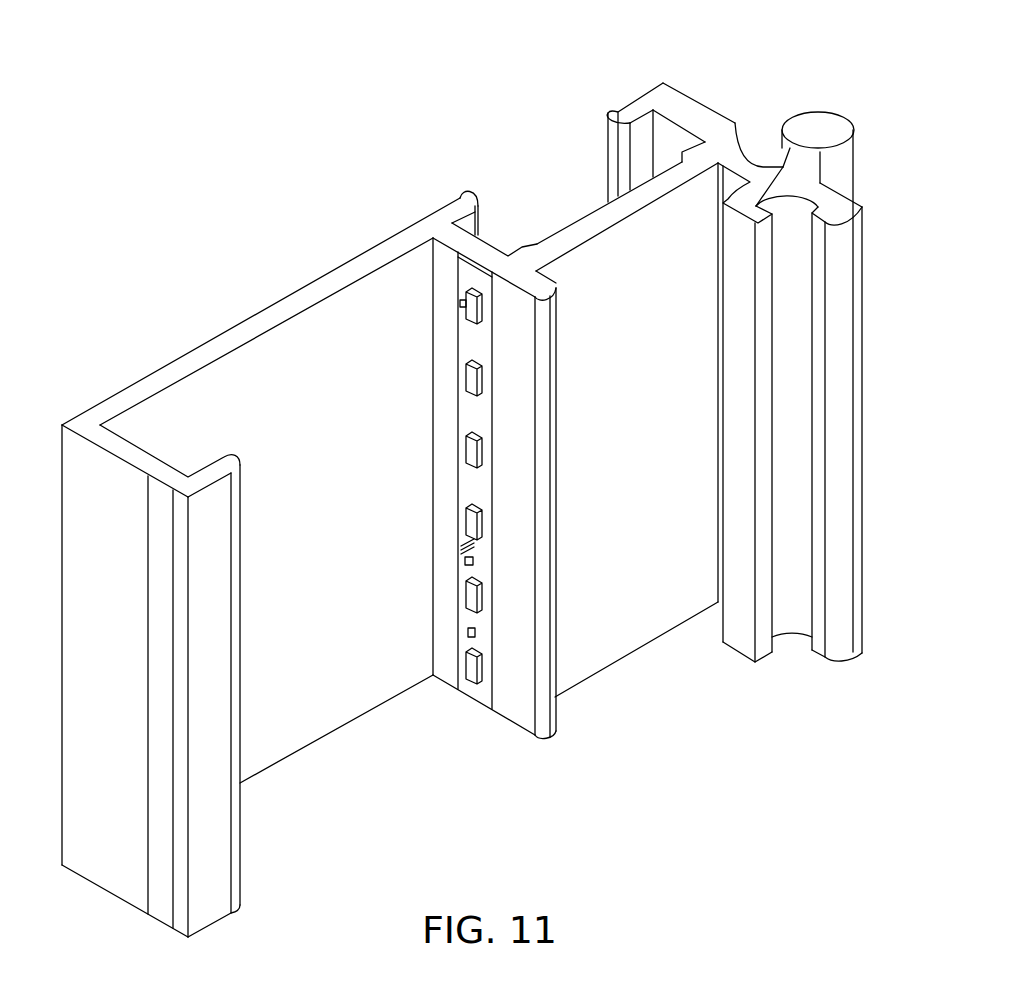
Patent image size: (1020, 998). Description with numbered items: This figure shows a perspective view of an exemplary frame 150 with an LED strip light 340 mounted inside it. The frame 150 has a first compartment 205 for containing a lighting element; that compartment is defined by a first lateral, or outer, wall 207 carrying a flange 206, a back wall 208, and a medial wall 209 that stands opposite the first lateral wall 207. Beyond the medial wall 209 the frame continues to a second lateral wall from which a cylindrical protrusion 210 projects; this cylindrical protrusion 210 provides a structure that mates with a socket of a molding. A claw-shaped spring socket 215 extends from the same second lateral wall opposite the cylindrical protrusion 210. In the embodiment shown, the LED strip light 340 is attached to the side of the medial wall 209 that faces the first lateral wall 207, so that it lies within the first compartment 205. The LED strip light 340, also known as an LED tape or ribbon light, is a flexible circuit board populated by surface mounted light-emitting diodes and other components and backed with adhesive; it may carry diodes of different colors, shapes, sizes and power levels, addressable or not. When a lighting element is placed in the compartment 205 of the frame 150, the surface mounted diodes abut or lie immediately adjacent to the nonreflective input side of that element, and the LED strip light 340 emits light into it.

The frame 150 is at (200, 300).
The first compartment 205 is at (300, 318).
The flange 206 is at (208, 828).
The first lateral wall 207 is at (108, 868).
The back wall 208 is at (305, 722).
The medial wall 209 is at (520, 695).
The cylindrical protrusion 210 is at (813, 130).
The claw-shaped spring socket 215 is at (787, 213).
The LED strip light 340 is at (470, 275).